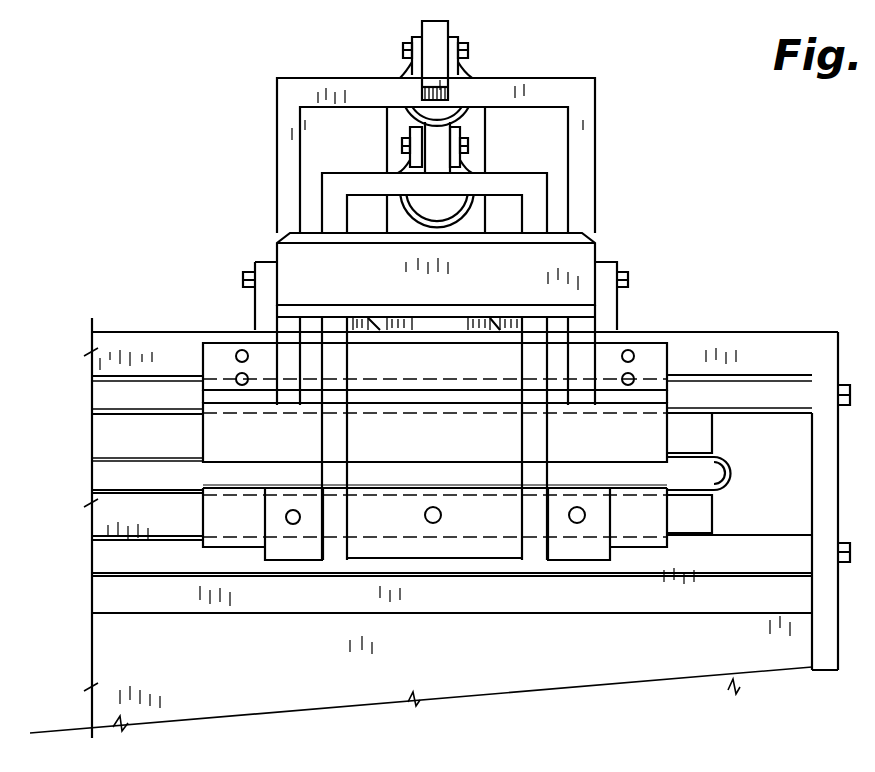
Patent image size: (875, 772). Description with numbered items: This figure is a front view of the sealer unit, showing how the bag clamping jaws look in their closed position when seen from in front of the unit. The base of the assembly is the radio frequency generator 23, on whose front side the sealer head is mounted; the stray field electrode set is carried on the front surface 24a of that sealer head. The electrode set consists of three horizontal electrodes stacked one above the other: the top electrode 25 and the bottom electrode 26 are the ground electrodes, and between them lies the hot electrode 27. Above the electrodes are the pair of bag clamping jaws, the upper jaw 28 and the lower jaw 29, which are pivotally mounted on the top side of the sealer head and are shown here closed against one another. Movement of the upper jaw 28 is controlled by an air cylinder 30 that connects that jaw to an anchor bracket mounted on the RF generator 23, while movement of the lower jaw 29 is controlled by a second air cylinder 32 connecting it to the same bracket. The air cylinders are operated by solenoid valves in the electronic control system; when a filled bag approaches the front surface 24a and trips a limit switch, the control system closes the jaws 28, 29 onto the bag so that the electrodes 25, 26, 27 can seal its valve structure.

The radio frequency (RF) generator 23 is at (300, 697).
The front surface of the sealer head 24a is at (100, 597).
The top electrode 25 is at (100, 405).
The bottom electrode 26 is at (770, 557).
The hot electrode 27 is at (731, 472).
The upper jaw 28 is at (213, 442).
The lower jaw 29 is at (213, 516).
The air cylinder 30 is at (463, 72).
The air cylinder 32 is at (463, 168).